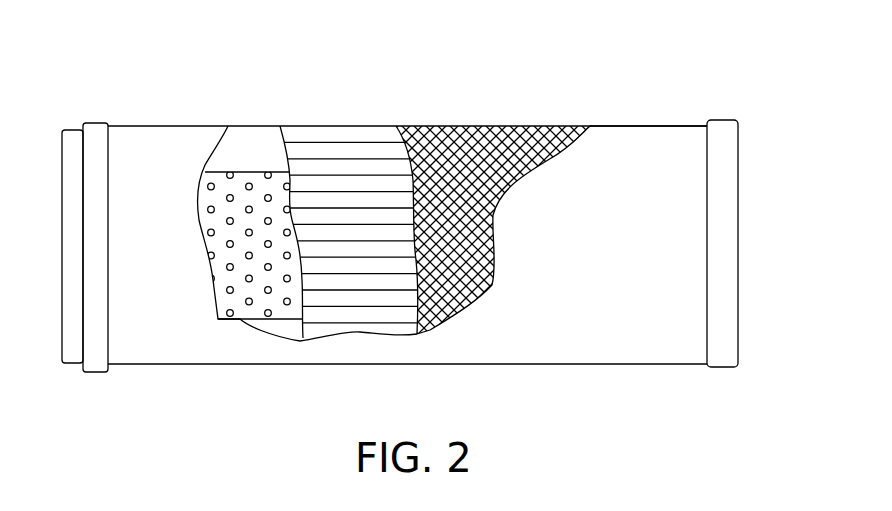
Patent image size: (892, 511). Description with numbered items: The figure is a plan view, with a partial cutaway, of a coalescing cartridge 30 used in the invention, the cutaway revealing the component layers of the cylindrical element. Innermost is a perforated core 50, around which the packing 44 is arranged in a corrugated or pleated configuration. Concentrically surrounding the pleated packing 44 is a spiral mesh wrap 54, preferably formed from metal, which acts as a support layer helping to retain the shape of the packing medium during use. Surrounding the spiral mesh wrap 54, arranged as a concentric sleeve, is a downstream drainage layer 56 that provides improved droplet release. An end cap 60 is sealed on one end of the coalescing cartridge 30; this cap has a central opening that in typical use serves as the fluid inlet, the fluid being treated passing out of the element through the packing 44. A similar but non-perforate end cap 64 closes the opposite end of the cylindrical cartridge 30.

The coalescing cartridge 30 is at (610, 278).
The packing 44 is at (342, 145).
The perforated core 50 is at (241, 185).
The spiral mesh wrap 54 is at (470, 140).
The downstream drainage layer 56 is at (630, 147).
The end cap 60 is at (70, 364).
The non-perforate end cap 64 is at (730, 302).